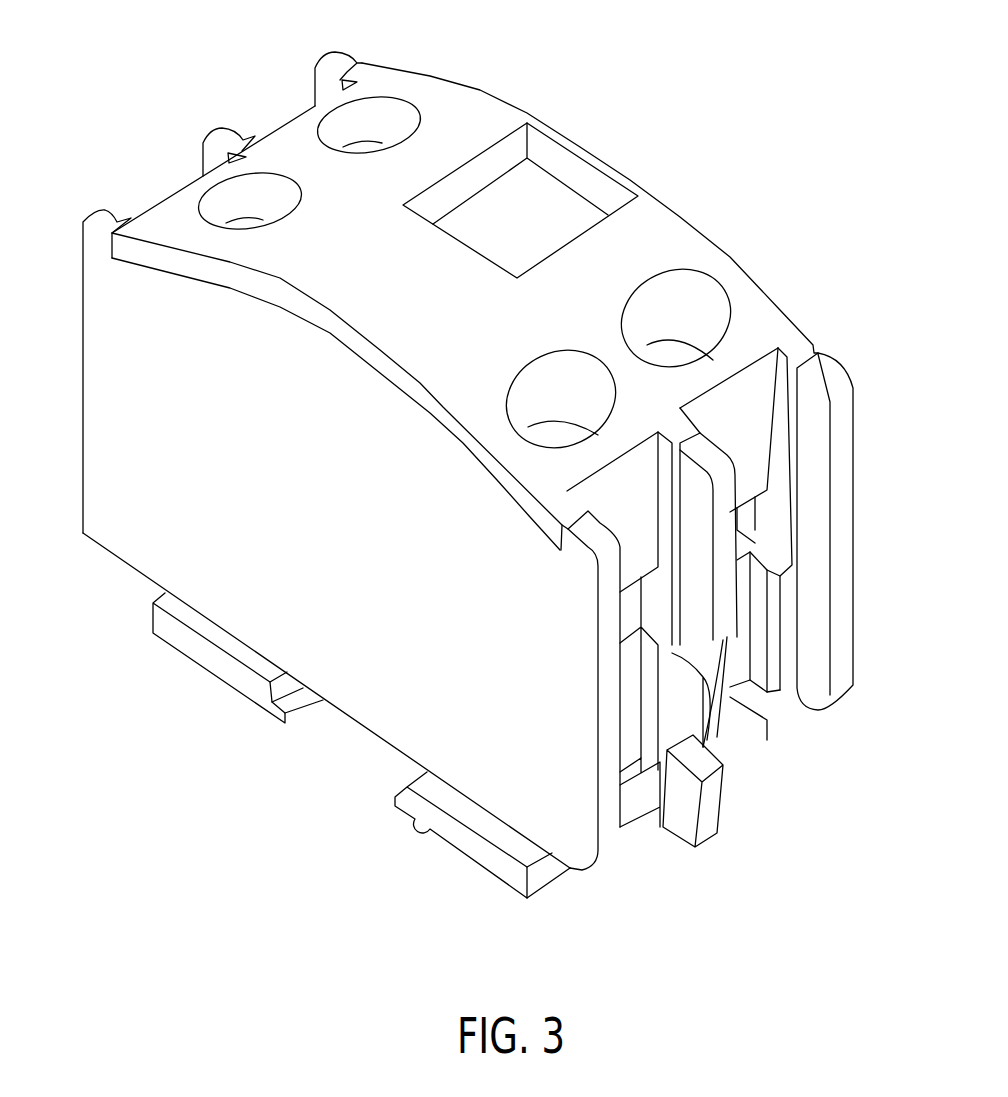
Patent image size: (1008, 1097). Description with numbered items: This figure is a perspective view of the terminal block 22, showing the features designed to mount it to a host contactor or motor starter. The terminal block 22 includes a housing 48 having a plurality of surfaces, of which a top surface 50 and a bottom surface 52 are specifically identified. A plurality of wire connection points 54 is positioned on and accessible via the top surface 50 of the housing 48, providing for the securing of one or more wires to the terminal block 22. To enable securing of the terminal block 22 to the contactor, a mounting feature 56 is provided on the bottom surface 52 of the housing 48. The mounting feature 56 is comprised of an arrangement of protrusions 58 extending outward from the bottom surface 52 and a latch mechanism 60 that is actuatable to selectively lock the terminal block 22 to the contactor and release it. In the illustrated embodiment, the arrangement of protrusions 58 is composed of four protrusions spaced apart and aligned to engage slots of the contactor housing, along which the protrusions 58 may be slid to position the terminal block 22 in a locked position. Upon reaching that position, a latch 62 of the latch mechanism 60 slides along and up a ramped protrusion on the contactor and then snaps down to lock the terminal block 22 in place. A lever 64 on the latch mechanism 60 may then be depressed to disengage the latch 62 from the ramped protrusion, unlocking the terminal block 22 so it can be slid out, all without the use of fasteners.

The terminal block 22 is at (572, 55).
The housing 48 is at (335, 540).
The top surface 50 is at (177, 228).
The bottom surface 52 is at (105, 577).
The wire connection points 54 is at (355, 138).
The mounting feature 56 is at (460, 893).
The protrusions 58 is at (197, 663).
The latch mechanism 60 is at (737, 845).
The latch 62 is at (637, 797).
The lever 64 is at (712, 795).